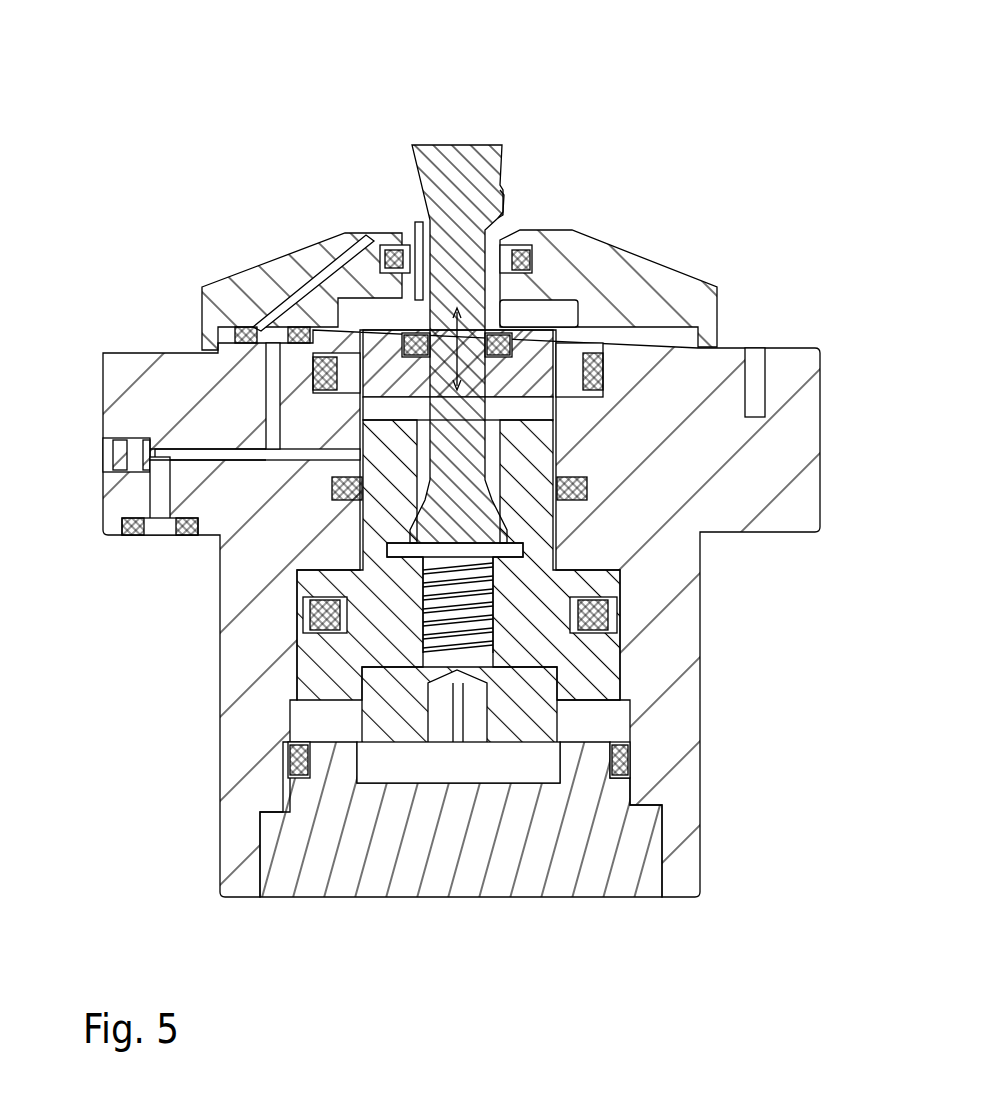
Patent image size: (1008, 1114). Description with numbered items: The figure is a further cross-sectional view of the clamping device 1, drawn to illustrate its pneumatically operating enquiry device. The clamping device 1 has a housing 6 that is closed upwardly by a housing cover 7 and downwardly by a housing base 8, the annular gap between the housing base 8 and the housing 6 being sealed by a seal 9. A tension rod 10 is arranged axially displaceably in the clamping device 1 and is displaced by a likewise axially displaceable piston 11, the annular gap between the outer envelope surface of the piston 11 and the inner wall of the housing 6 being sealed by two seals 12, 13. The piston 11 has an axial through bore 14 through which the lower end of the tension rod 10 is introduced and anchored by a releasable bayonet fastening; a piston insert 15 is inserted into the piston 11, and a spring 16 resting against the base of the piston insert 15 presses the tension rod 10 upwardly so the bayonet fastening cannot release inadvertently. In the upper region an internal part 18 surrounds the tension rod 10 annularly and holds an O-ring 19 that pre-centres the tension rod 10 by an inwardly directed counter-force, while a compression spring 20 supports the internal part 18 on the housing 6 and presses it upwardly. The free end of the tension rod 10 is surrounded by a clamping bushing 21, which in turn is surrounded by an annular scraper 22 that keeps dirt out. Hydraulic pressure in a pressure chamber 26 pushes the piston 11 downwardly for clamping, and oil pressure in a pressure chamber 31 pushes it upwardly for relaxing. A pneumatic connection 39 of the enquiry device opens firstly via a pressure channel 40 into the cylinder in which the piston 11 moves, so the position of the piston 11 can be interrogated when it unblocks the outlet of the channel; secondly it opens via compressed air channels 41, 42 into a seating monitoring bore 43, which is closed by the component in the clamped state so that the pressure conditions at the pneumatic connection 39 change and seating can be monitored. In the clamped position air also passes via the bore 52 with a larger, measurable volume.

The clamping device 1 is at (299, 86).
The housing 6 is at (780, 440).
The housing cover 7 is at (660, 282).
The housing base 8 is at (440, 890).
The seal 9 is at (630, 760).
The tension rod 10 is at (452, 160).
The piston 11 is at (593, 682).
The seal 12 is at (615, 585).
The seal 13 is at (600, 625).
The axial through bore 14 is at (587, 490).
The piston insert 15 is at (530, 737).
The spring 16 is at (385, 637).
The internal part 18 is at (587, 307).
The O-ring 19 is at (372, 330).
The compression spring 20 is at (603, 370).
The clamping bushing 21 is at (503, 205).
The scraper 22 is at (425, 222).
The pressure chamber 26 is at (620, 578).
The pressure chamber 31 is at (610, 700).
The pneumatic connection 39 is at (158, 532).
The pressure channel 40 is at (240, 458).
The compressed air channel 41 is at (265, 400).
The compressed air channel 42 is at (280, 312).
The seating monitoring bore 43 is at (405, 330).
The bore 52 is at (298, 337).